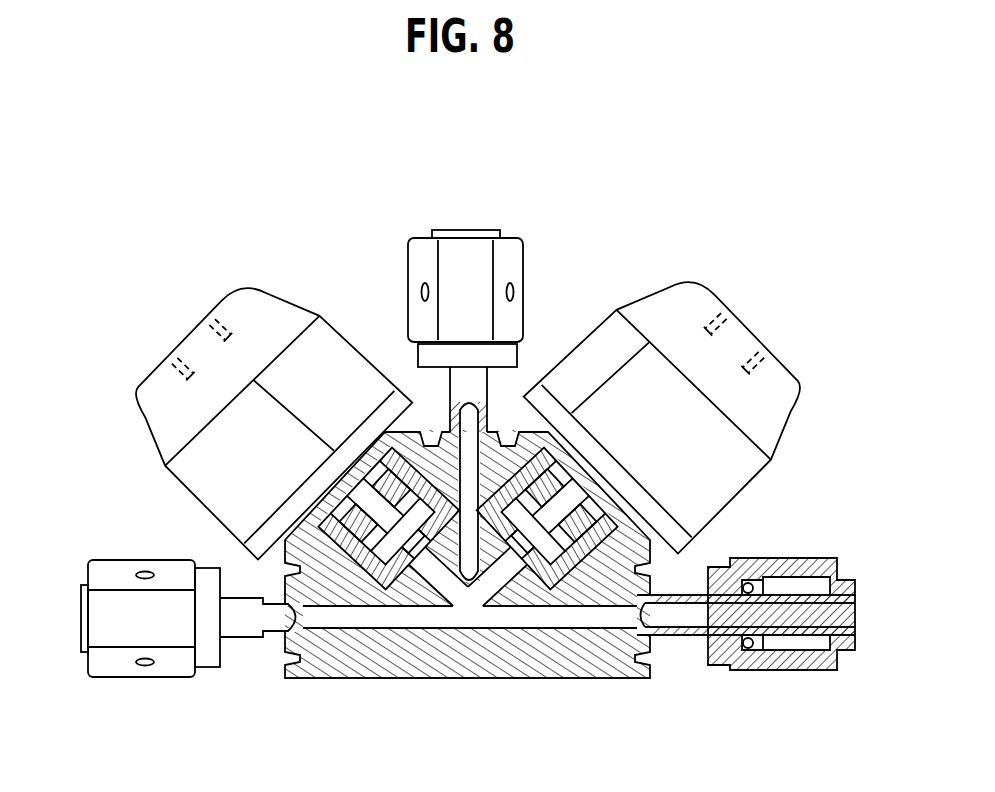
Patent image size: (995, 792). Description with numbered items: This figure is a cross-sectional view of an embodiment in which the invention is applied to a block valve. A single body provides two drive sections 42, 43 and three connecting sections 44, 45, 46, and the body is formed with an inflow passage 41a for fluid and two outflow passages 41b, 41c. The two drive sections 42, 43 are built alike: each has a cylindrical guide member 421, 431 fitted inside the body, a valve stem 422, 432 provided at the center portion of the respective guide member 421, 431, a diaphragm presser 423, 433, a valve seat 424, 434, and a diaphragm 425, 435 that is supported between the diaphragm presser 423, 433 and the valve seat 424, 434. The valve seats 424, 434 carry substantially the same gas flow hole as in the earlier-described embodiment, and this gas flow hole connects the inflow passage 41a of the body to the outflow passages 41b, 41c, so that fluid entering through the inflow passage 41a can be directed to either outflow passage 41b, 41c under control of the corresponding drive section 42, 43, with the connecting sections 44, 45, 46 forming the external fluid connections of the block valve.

The inflow passage 41a is at (348, 622).
The outflow passage 41b is at (542, 438).
The outflow passage 41c is at (617, 622).
The drive section 42 is at (272, 312).
The cylindrical guide member 421 is at (350, 470).
The valve stem 422 is at (272, 568).
The diaphragm presser 423 is at (250, 382).
The valve seat 424 is at (405, 572).
The diaphragm 425 is at (372, 572).
The drive section 43 is at (777, 408).
The cylindrical guide member 431 is at (490, 445).
The valve stem 432 is at (705, 290).
The diaphragm presser 433 is at (678, 552).
The valve seat 434 is at (531, 572).
The diaphragm 435 is at (564, 572).
The connecting section 44 is at (100, 580).
The connecting section 45 is at (506, 242).
The connecting section 46 is at (828, 557).